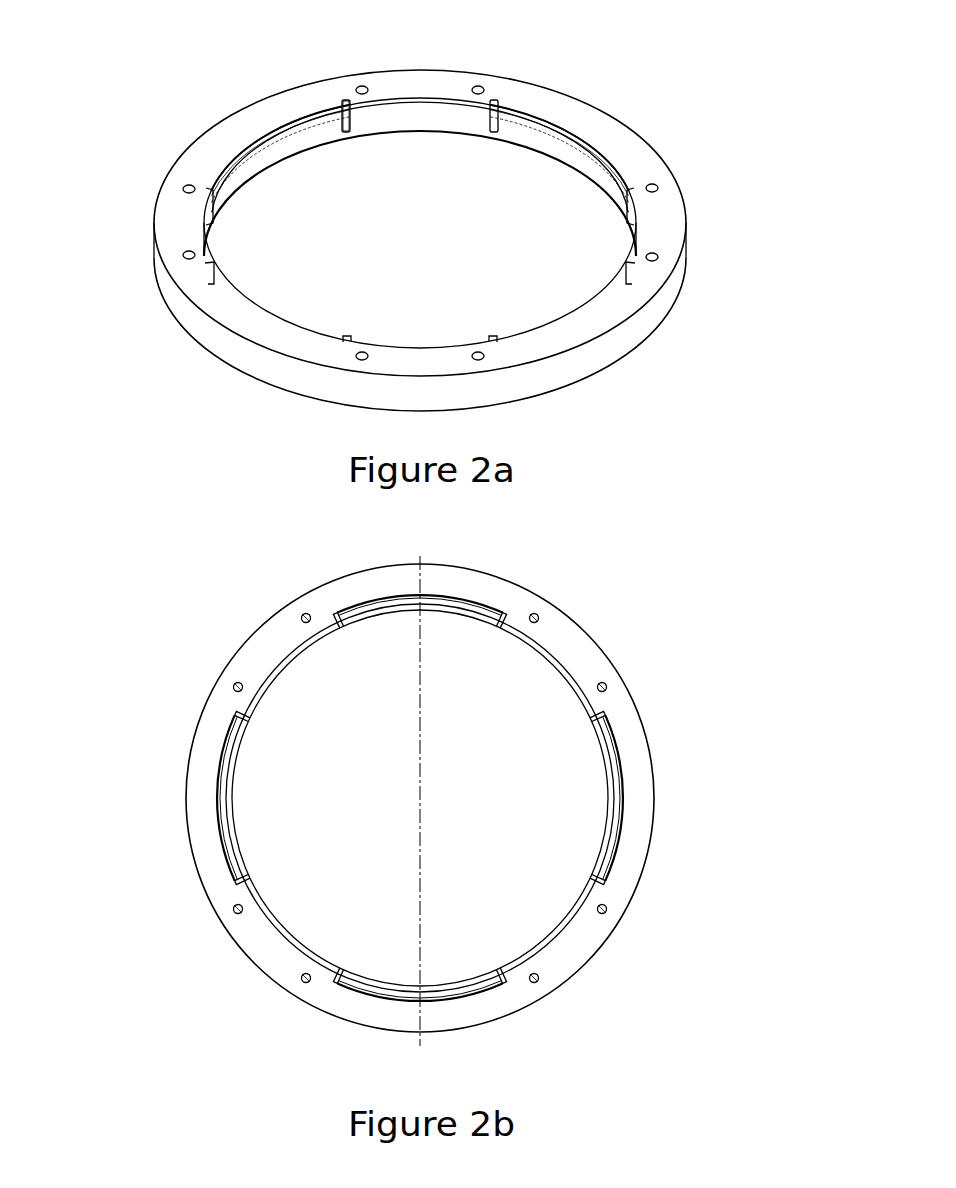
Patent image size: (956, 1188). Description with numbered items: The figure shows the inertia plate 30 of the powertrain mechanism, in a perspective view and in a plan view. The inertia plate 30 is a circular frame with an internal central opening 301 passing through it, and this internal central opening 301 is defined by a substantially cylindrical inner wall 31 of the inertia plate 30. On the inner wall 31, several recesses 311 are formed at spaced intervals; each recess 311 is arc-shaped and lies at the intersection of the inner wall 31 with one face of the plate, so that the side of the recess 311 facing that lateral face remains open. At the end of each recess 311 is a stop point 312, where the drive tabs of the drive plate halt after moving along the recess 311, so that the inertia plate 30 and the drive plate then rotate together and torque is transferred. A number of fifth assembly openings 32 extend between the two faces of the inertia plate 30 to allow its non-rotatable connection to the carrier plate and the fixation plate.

In FIG. 2A, the inertia plate 30 is at (418, 229).
In FIG. 2A, the inner wall 31 is at (483, 174).
In FIG. 2B, the inner wall 31 is at (310, 956).
In FIG. 2A, the recesses 311 is at (565, 130).
In FIG. 2B, the recesses 311 is at (232, 855).
In FIG. 2A, the stop point 312 is at (350, 122).
In FIG. 2A, the internal central opening 301 is at (320, 265).
In FIG. 2B, the internal central opening 301 is at (290, 748).
In FIG. 2A, the fifth assembly openings 32 is at (654, 262).
In FIG. 2B, the fifth assembly openings 32 is at (605, 915).